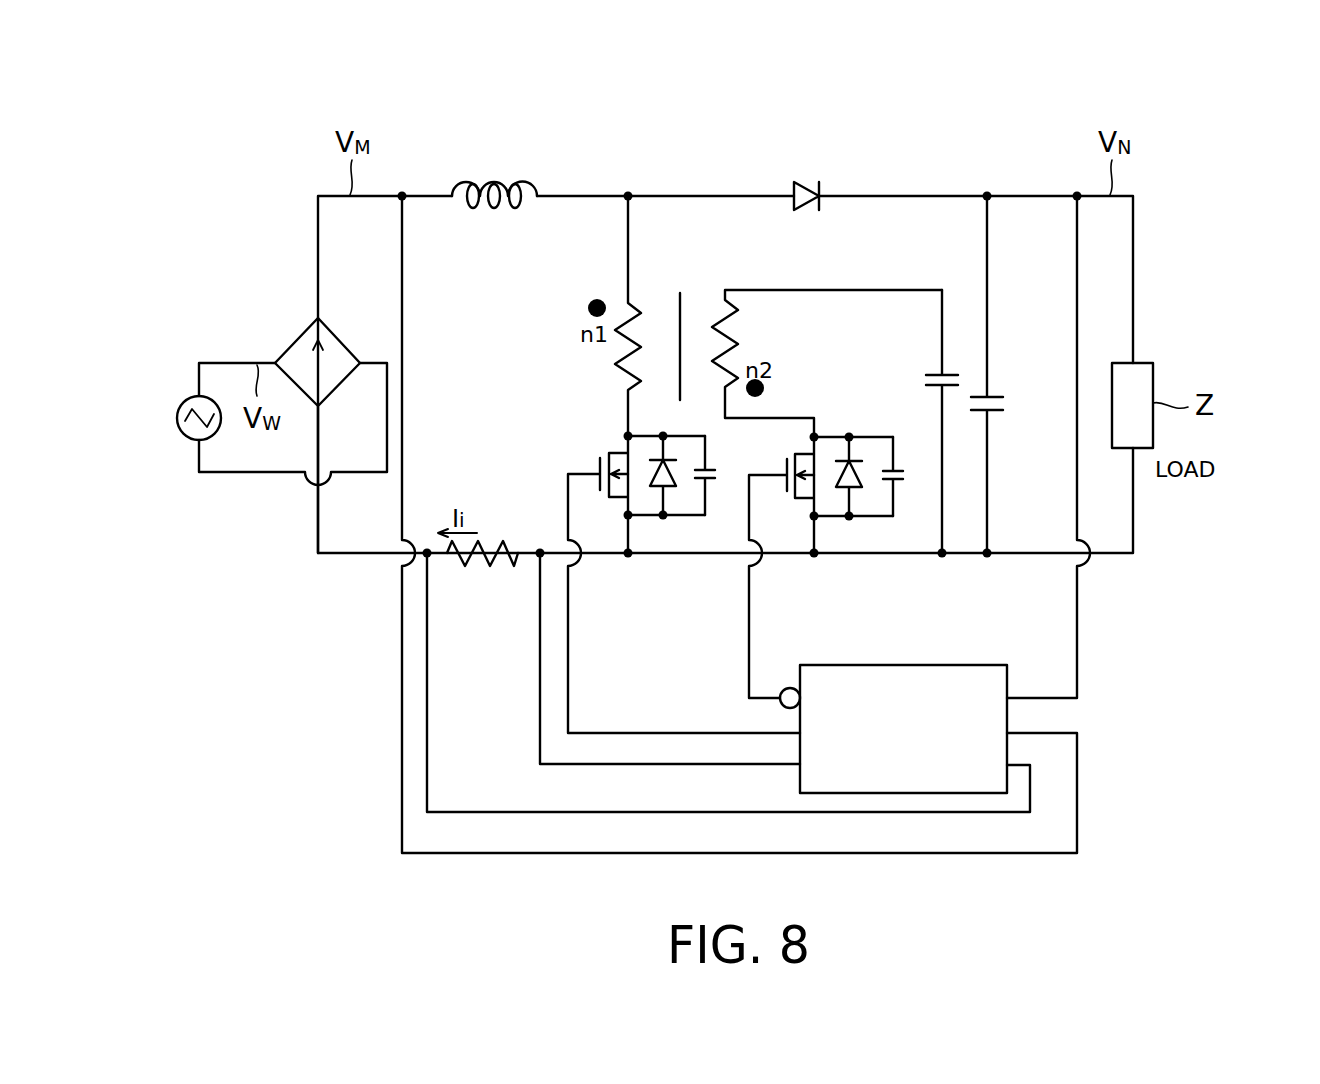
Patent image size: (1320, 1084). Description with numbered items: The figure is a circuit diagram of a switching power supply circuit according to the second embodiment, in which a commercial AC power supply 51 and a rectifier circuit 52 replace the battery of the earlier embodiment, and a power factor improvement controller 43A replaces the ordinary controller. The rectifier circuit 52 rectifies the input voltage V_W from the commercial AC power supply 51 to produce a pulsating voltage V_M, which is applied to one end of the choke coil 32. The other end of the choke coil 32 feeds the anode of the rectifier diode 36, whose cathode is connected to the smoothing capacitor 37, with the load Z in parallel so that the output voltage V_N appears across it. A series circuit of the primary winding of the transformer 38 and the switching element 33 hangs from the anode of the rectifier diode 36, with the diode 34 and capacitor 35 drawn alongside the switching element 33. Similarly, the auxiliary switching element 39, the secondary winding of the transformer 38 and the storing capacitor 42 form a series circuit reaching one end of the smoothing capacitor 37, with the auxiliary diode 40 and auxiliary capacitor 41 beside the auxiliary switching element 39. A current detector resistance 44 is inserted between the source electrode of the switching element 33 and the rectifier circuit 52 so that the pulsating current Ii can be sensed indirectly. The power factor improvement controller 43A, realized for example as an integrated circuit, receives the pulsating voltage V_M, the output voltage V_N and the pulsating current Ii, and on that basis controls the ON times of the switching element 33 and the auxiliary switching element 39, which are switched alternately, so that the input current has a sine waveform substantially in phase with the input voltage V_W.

The choke coil 32 is at (487, 180).
The switching element 33 is at (606, 451).
The diode 34 is at (651, 500).
The capacitor 35 is at (697, 483).
The rectifier diode 36 is at (808, 181).
The smoothing capacitor 37 is at (993, 396).
The transformer 38 is at (681, 303).
The auxiliary switching element 39 is at (790, 500).
The auxiliary diode 40 is at (846, 500).
The auxiliary capacitor 41 is at (891, 484).
The storing capacitor 42 is at (935, 373).
The power factor improvement controller 43A is at (903, 664).
The current detector resistance 44 is at (497, 541).
The commercial AC power supply 51 is at (186, 397).
The rectifier circuit 52 is at (297, 343).